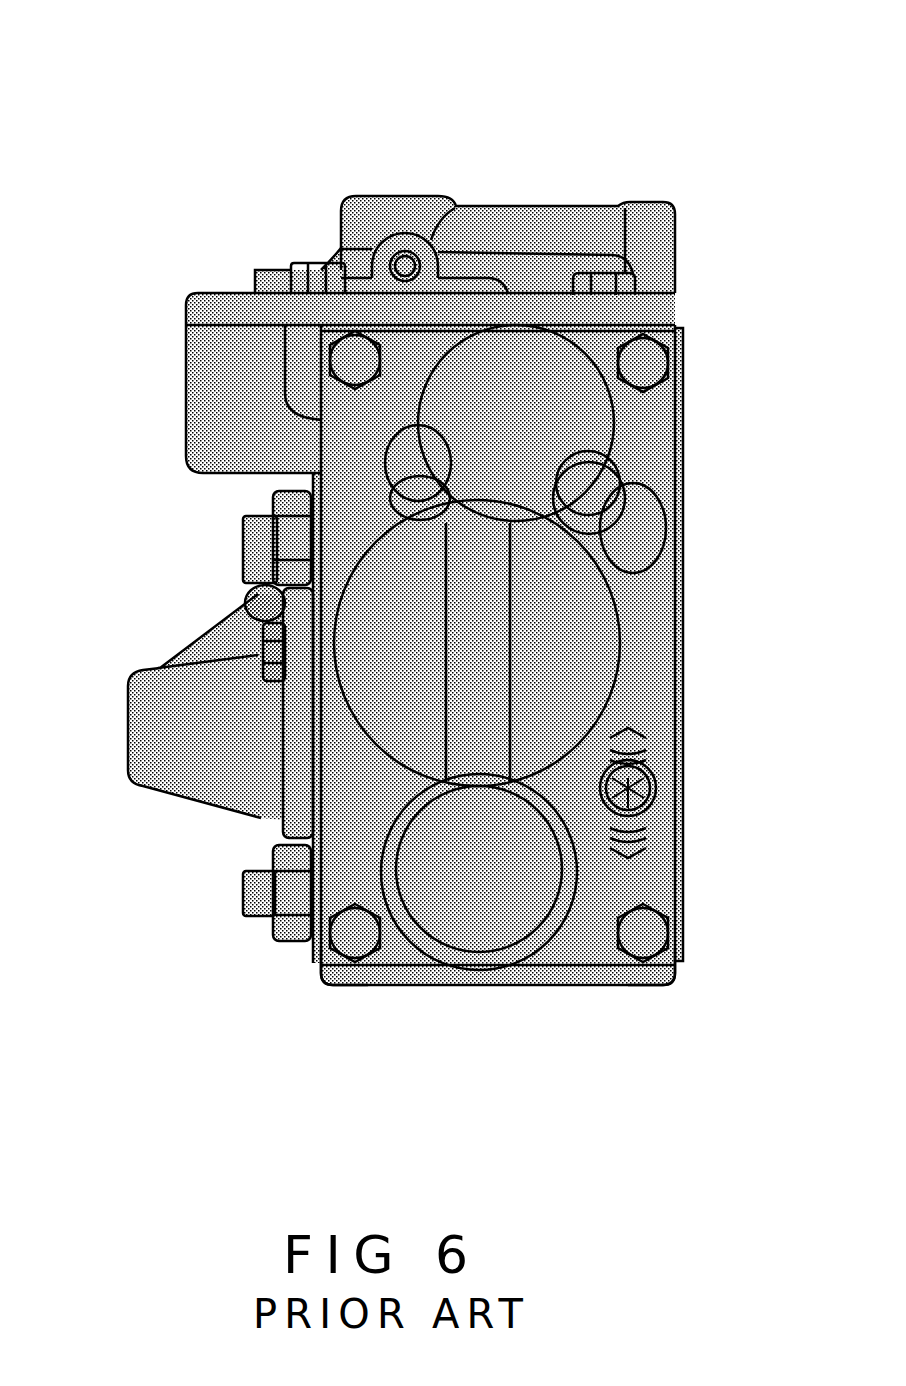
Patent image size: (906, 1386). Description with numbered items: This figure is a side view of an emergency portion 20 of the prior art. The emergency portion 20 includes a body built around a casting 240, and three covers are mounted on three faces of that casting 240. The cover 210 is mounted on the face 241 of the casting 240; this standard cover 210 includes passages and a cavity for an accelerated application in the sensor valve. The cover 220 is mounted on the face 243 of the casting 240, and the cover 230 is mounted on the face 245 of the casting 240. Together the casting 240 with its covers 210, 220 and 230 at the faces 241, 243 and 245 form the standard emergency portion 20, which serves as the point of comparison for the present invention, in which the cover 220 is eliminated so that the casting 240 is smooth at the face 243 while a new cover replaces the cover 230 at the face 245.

The emergency portion 20 is at (184, 86).
The cover 210 is at (505, 205).
The cover 220 is at (645, 630).
The cover 230 is at (145, 767).
The casting 240 is at (182, 378).
The face 241 is at (210, 308).
The face 243 is at (672, 965).
The face 245 is at (310, 953).